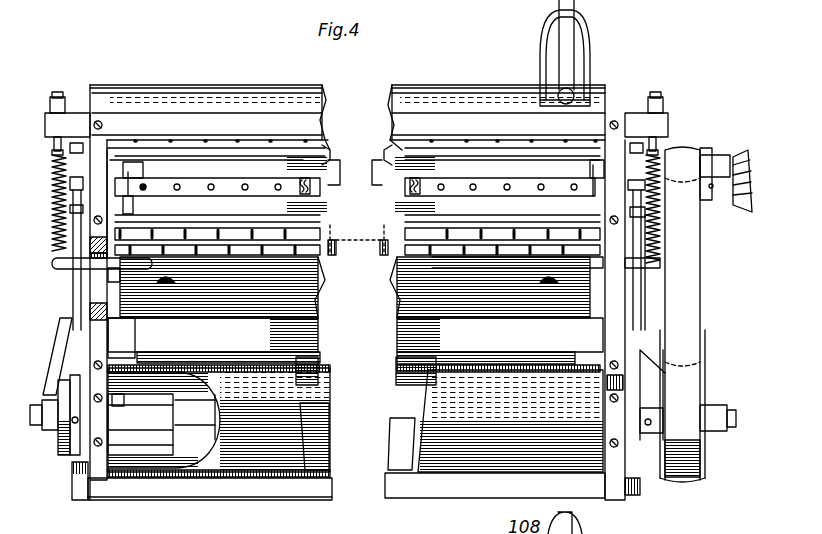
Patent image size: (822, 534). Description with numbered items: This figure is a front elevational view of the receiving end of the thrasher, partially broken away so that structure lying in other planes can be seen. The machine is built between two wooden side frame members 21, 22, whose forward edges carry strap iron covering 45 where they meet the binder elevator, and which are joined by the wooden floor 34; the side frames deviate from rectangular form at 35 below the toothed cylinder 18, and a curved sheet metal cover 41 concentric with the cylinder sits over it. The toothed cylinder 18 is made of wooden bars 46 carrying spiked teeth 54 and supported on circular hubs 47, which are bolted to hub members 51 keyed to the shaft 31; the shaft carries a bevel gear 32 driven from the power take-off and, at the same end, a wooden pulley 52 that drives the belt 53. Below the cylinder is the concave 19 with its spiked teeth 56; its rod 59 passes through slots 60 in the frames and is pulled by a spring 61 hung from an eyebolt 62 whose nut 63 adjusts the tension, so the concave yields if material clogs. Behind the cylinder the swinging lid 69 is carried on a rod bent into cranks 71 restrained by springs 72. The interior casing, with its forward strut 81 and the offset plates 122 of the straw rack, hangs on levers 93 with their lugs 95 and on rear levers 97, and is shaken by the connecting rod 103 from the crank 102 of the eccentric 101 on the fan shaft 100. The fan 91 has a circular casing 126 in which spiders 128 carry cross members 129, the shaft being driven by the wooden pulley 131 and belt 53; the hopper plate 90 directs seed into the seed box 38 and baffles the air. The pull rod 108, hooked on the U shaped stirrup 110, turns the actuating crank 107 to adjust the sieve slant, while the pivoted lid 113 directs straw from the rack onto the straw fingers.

The toothed cylinder 18 is at (254, 135).
The concave 19 is at (400, 303).
The frame member 21 is at (103, 148).
The frame member 22 is at (617, 143).
The shaft 31 is at (374, 168).
The bevel gear 32 is at (750, 165).
The floor 34 is at (384, 480).
The deviation below the toothed cylinder 35 is at (115, 360).
The seed box 38 is at (390, 425).
The curved sheet metal cover 41 is at (392, 93).
The strap iron covering 45 is at (99, 118).
The wooden bars 46 is at (400, 200).
The circular hubs 47 is at (128, 172).
The hub members 51 is at (148, 178).
The wooden pulley 52 is at (704, 168).
The belt 53 is at (700, 275).
The spiked teeth 54 is at (268, 187).
The spiked teeth 56 is at (165, 245).
The rod 59 is at (58, 270).
The slots 60 is at (93, 288).
The spring 61 is at (52, 212).
The eyebolt 62 is at (52, 152).
The nut 63 is at (52, 102).
The swinging lid 69 is at (340, 140).
The cranks 71 is at (84, 112).
The springs 72 is at (70, 150).
The forward strut 81 is at (395, 334).
The sheet metal piece 90 is at (396, 376).
The fan 91 is at (218, 404).
The lever 93 is at (78, 488).
The bolt or lug 95 is at (110, 333).
The lever 97 is at (72, 305).
The fan shaft 100 is at (218, 412).
The eccentric 101 is at (58, 445).
The crank 102 is at (40, 415).
The connecting rod 103 is at (58, 392).
The actuating crank 107 is at (587, 55).
The pull rod 108 is at (560, 48).
The U shaped stirrup 110 is at (541, 85).
The sheet metal lid 113 is at (384, 235).
The sheet metal pieces 122 is at (385, 278).
The fan casing 126 is at (250, 455).
The spiders 128 is at (123, 462).
The cross members 129 is at (186, 456).
The wooden pulley 131 is at (702, 472).